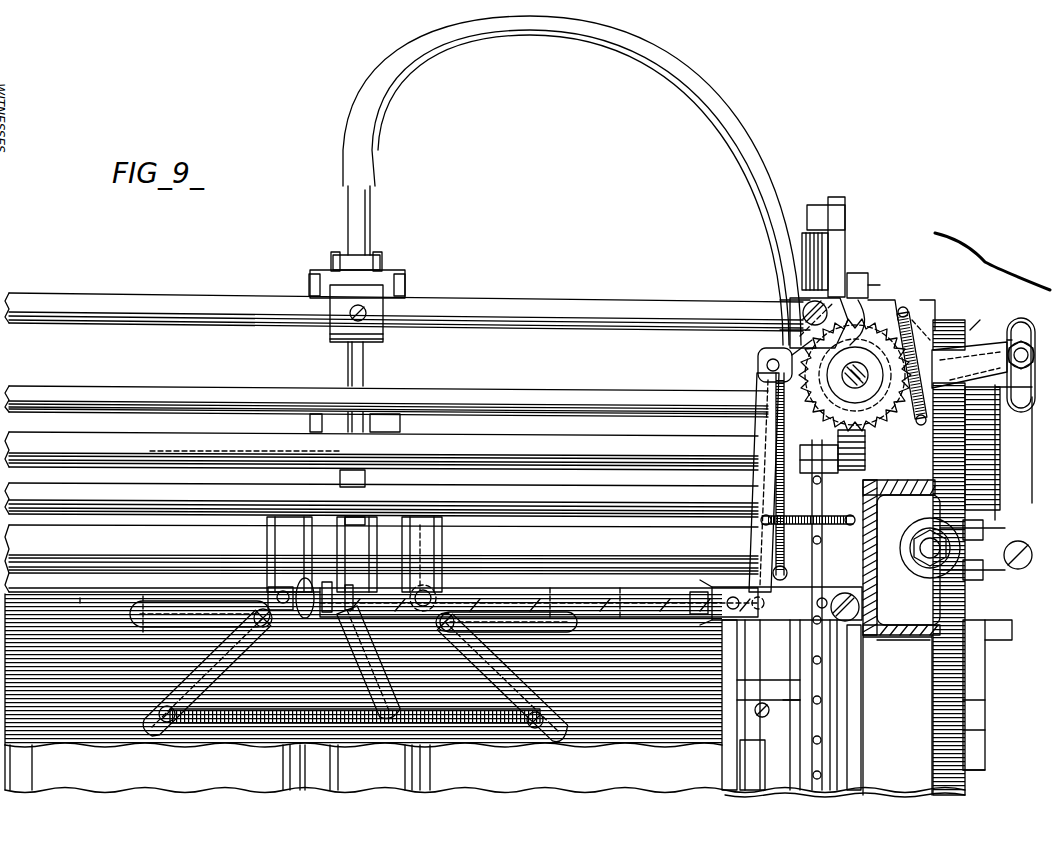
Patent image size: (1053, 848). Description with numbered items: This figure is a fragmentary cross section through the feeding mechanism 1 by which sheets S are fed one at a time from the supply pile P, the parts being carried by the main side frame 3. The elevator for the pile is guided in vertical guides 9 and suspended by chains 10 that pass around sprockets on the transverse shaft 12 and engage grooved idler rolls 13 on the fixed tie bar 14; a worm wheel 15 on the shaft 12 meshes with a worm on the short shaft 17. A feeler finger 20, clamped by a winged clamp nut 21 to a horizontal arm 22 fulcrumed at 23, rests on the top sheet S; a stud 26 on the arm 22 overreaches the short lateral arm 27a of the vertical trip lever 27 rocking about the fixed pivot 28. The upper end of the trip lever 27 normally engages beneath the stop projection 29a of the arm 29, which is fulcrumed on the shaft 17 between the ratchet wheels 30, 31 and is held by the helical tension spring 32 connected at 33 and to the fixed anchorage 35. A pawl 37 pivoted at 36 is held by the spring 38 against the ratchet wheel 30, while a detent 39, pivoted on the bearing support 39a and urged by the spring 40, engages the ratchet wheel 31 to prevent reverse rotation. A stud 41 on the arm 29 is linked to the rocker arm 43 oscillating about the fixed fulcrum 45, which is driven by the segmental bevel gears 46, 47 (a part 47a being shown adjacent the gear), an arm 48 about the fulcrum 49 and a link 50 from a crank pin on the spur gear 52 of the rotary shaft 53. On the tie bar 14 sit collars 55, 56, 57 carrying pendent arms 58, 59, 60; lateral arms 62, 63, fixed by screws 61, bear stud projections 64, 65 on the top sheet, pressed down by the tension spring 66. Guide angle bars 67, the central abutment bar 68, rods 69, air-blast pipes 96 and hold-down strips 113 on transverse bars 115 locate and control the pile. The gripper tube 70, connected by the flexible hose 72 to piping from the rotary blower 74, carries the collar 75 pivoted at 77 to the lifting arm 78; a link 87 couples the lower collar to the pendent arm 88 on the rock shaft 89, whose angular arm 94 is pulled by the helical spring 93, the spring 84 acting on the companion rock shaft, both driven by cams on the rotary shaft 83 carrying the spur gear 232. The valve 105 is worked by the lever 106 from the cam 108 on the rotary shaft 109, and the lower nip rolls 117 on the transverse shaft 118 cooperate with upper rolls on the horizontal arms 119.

The flexible hose 72 is at (521, 32).
The tube 70 is at (372, 190).
The collar 75 is at (340, 254).
The pivot 77 is at (407, 291).
The clevised lifting arm 78 is at (379, 283).
The rock shaft 89 is at (205, 296).
The pawl pivot 36 is at (803, 314).
The rotary shaft 83 is at (207, 387).
The vertical trip lever 27 is at (758, 452).
The transverse shaft 12 is at (245, 443).
The transverse rotary shaft 53 is at (173, 492).
The tie bar 14 is at (546, 525).
The pendent arm 88 is at (365, 358).
The link 87 is at (388, 425).
The collar 56 is at (349, 525).
The collar 57 is at (268, 548).
The winged clamp nut 21 is at (302, 580).
The feeler finger 20 is at (335, 583).
The screws 61 is at (262, 592).
The lateral arm 63 is at (185, 600).
The tapered stud projection 65 is at (142, 600).
The sheet S is at (80, 596).
The pendent arm 60 is at (207, 672).
The pendent arm 59 is at (368, 662).
The pendent arm 58 is at (502, 677).
The lateral arm 62 is at (500, 612).
The tension spring 66 is at (222, 725).
The horizontal arm 22 is at (590, 588).
The tapered stud projection 64 is at (550, 588).
The collar 55 is at (428, 554).
The lower nip rolls 117 is at (620, 588).
The short lateral arm 27a is at (712, 600).
The supply pile P is at (598, 718).
The vertical guide angle bars 67 is at (485, 768).
The vertical pipes 96 is at (282, 772).
The rods 69 is at (347, 767).
The central vertical abutment bar 68 is at (351, 767).
The rotary shaft 109 is at (724, 745).
The valve 105 is at (768, 765).
The transverse rotary shaft 118 is at (767, 703).
The cam 108 is at (767, 705).
The lever 106 is at (758, 703).
The chains 10 is at (824, 681).
The vertical guides 9 is at (848, 694).
The grooved idler rolls 13 is at (785, 707).
The main side frame 3 is at (845, 716).
The rotary blower 74 is at (886, 638).
The fixed pivot 28 is at (781, 602).
The helical tension spring 32 is at (762, 498).
The spring connection 33 is at (766, 368).
The stop projection 29a is at (768, 360).
The fixed anchorage 35 is at (773, 575).
The stud 26 is at (762, 598).
The short longitudinally extending shaft 17 is at (867, 412).
The ratchet wheel 31 is at (887, 405).
The worm wheel 15 is at (855, 447).
The spring 38 is at (812, 302).
The ratchet wheel 30 is at (868, 300).
The detent 39 is at (903, 312).
The spring 40 is at (918, 312).
The upstanding bearing support 39a is at (925, 318).
The helical spring 93 is at (805, 236).
The angular arm 94 is at (836, 197).
The helical tension spring 84 is at (852, 272).
The pawl 37 is at (862, 290).
The arm 29 is at (958, 345).
The segmental bevel gear 47 is at (988, 412).
The spur gear 52 is at (998, 440).
The fixed fulcrum 49 is at (1033, 497).
The stud 41 is at (1021, 322).
The pin 47a is at (1010, 338).
The spur gear 232 is at (978, 320).
The feeding mechanism 1 is at (992, 261).
The fulcrum 23 is at (878, 607).
The fixed fulcrum 45 is at (925, 545).
The segmental bevel gear 46 is at (935, 582).
The link 50 is at (1012, 572).
The rocker arm 43 is at (975, 600).
The arm 48 is at (982, 600).
The horizontal arms 119 is at (968, 660).
The transverse supporting bars 115 is at (965, 690).
The hold-down strips 113 is at (965, 777).